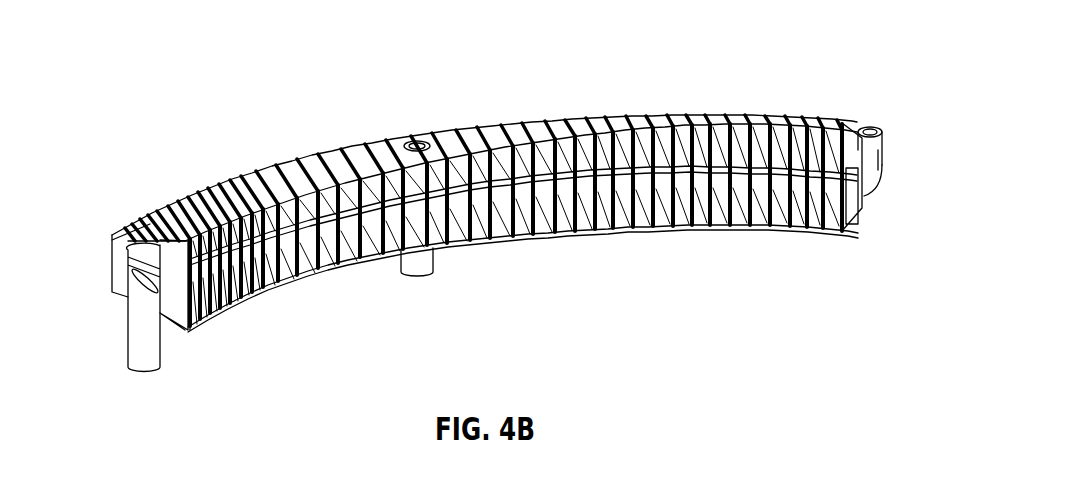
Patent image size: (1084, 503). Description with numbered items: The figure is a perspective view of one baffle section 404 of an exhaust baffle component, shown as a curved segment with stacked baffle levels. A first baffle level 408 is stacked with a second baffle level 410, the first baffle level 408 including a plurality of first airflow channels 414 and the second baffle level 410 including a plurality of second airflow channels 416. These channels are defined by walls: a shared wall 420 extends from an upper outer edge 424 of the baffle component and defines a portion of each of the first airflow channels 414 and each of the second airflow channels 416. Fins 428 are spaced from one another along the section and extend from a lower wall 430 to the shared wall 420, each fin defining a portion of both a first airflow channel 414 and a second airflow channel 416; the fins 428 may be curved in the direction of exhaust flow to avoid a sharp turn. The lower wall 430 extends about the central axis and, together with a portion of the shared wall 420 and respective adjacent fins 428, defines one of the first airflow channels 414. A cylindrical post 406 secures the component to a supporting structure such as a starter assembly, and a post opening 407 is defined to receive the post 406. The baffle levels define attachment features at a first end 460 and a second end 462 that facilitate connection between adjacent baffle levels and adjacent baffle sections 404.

The baffle section 404 is at (721, 37).
The post 406 is at (113, 298).
The post opening 407 is at (143, 266).
The first baffle level 408 is at (869, 203).
The second baffle level 410 is at (875, 156).
The first airflow channels 414 is at (738, 227).
The second airflow channels 416 is at (740, 126).
The shared wall 420 is at (738, 150).
The upper outer edge 424 is at (634, 116).
The fins 428 is at (725, 205).
The lower wall 430 is at (757, 204).
The first end 460 is at (162, 350).
The second end 462 is at (889, 166).